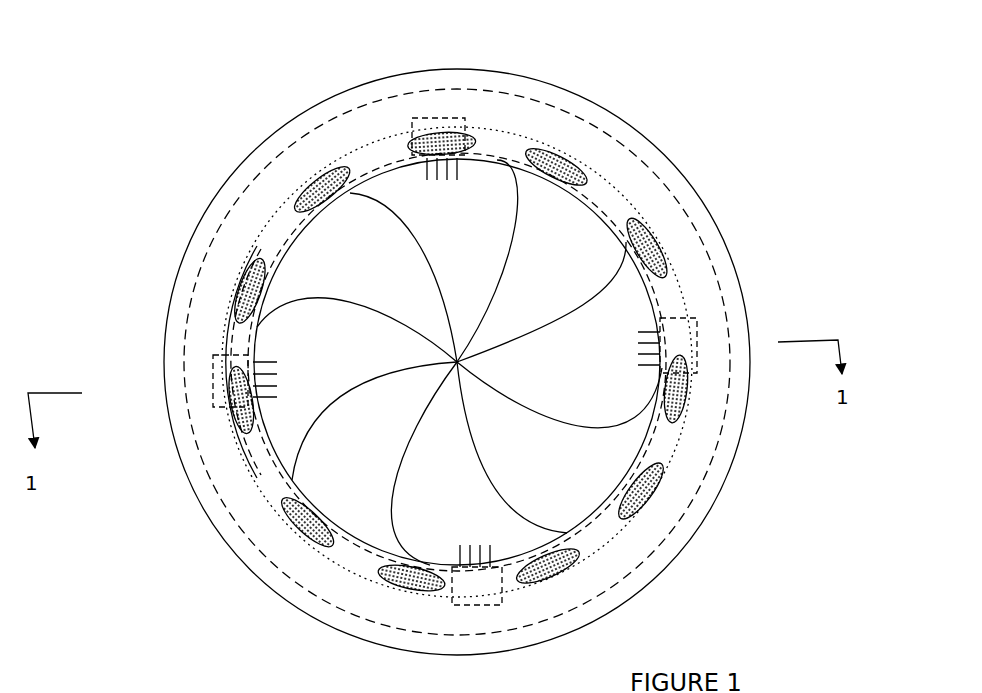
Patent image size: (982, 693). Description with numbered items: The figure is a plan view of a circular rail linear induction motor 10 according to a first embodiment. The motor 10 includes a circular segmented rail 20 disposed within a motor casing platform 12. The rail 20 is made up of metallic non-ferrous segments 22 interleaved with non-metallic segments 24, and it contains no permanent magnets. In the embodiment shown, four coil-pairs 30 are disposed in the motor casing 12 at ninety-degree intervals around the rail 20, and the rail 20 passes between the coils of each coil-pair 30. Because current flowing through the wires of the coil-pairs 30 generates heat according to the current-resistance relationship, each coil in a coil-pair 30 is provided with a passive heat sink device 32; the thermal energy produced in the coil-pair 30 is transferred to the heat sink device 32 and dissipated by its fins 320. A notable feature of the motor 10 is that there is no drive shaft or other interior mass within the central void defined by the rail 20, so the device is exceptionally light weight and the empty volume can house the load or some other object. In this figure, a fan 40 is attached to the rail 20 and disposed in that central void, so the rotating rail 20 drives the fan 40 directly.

The circular rail linear induction motor 10 is at (779, 50).
The motor casing platform 12 is at (233, 170).
The circular segmented rail 20 is at (686, 433).
The metallic non-ferrous segments 22 is at (607, 192).
The non-metallic segments 24 is at (560, 160).
The coil-pairs 30 is at (212, 378).
The passive heat sink device 32 is at (456, 362).
The fins 320 is at (636, 369).
The fan 40 is at (533, 262).